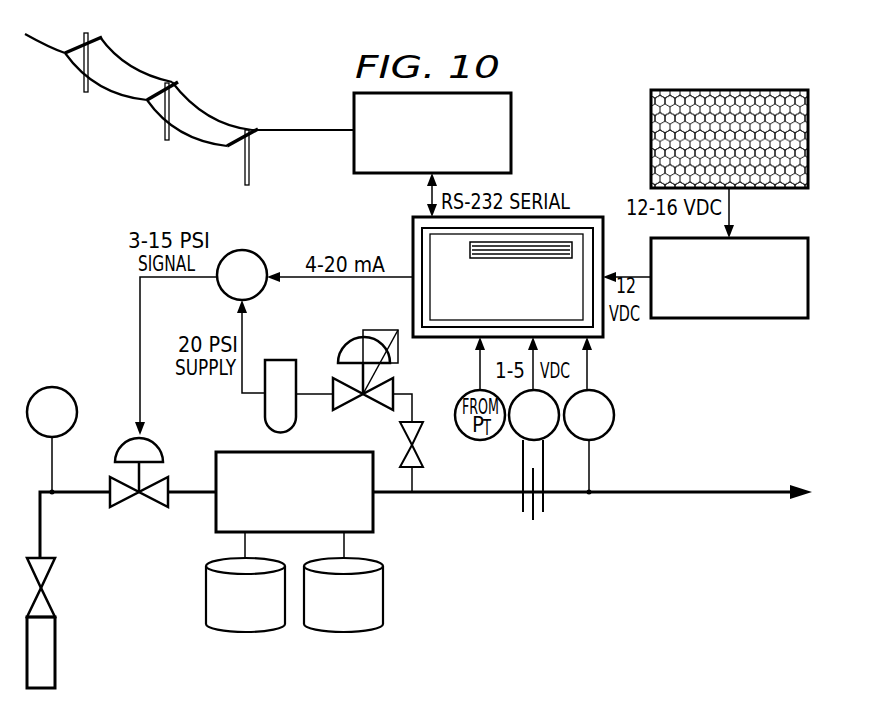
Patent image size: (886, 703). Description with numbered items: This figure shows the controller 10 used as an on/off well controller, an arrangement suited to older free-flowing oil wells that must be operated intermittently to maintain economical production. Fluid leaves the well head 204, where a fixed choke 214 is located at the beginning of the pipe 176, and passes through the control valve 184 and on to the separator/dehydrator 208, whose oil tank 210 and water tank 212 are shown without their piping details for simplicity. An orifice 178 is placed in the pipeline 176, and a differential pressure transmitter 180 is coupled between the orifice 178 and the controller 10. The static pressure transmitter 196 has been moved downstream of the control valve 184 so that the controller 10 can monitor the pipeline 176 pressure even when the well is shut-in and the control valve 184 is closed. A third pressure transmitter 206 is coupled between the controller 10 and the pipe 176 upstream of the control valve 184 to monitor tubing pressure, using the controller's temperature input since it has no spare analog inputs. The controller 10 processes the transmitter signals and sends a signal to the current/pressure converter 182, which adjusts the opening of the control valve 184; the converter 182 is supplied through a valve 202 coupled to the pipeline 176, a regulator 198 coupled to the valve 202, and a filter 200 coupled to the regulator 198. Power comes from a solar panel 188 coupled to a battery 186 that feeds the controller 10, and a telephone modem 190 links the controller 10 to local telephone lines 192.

The controller 10 is at (517, 291).
The pipeline 176 is at (700, 492).
The orifice 178 is at (529, 522).
The differential pressure transmitter 180 is at (521, 437).
The current/pressure converter 182 is at (258, 257).
The control valve 184 is at (176, 454).
The battery 186 is at (798, 311).
The solar panel 188 is at (651, 105).
The telephone modem 190 is at (503, 171).
The telephone lines 192 is at (124, 160).
The static pressure transmitter 196 is at (606, 397).
The regulator 198 is at (393, 388).
The filter 200 is at (296, 412).
The valve 202 is at (423, 445).
The well head 204 is at (56, 678).
The third pressure transmitter 206 is at (62, 390).
The separator/dehydrator 208 is at (366, 528).
The oil tank 210 is at (281, 627).
The water tank 212 is at (379, 627).
The fixed choke 214 is at (55, 607).